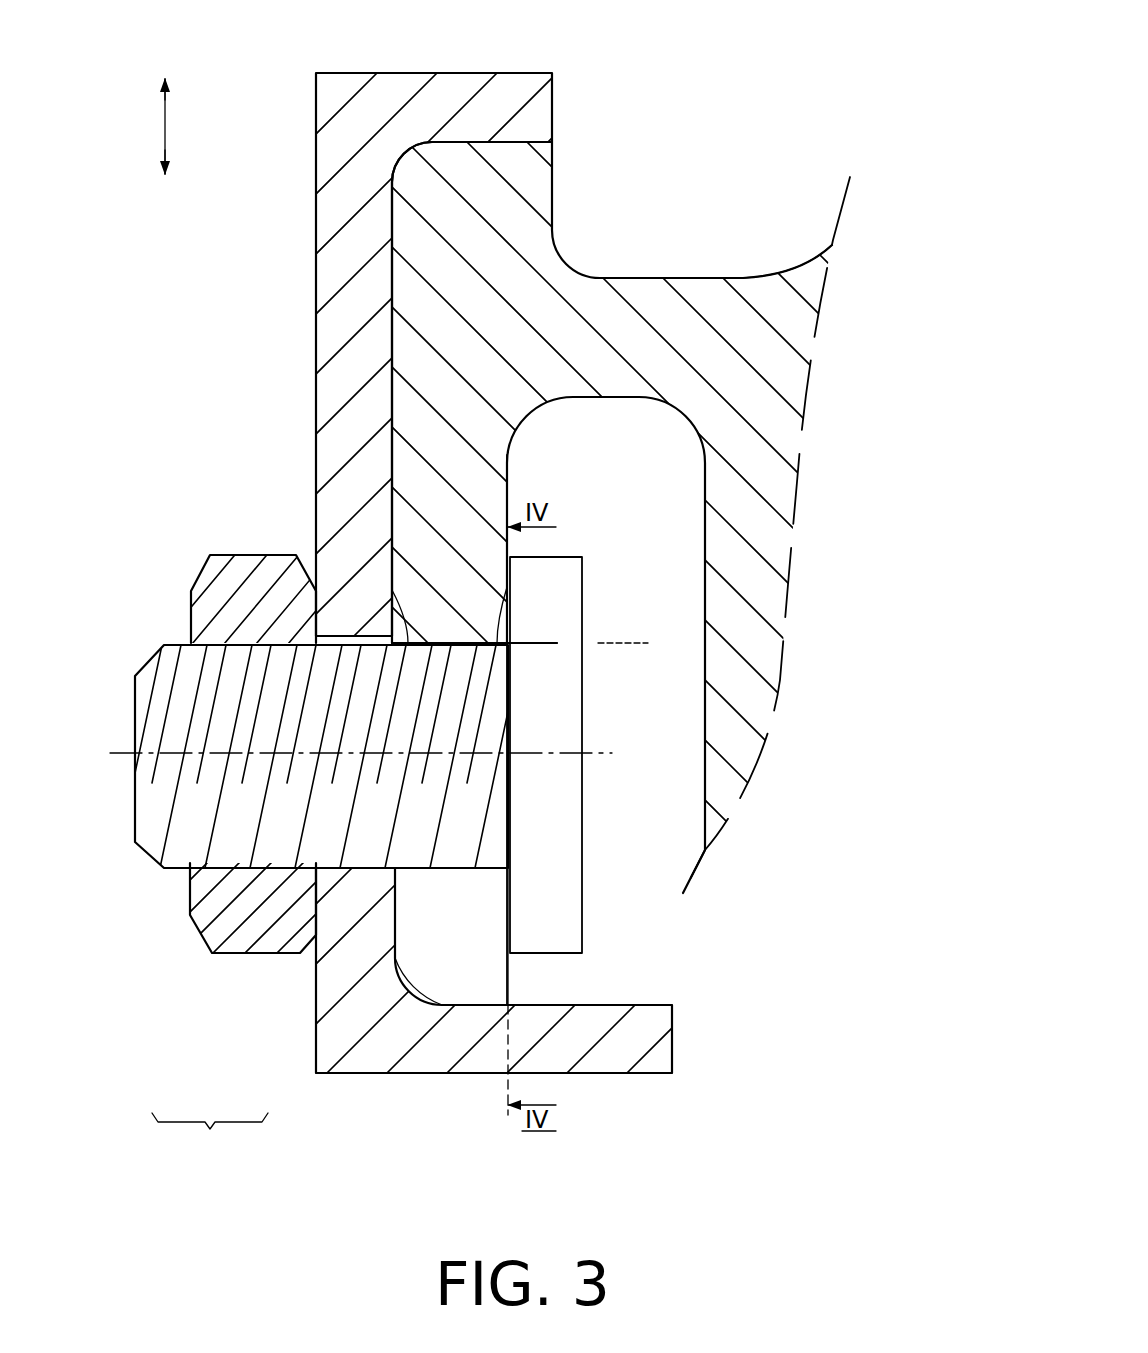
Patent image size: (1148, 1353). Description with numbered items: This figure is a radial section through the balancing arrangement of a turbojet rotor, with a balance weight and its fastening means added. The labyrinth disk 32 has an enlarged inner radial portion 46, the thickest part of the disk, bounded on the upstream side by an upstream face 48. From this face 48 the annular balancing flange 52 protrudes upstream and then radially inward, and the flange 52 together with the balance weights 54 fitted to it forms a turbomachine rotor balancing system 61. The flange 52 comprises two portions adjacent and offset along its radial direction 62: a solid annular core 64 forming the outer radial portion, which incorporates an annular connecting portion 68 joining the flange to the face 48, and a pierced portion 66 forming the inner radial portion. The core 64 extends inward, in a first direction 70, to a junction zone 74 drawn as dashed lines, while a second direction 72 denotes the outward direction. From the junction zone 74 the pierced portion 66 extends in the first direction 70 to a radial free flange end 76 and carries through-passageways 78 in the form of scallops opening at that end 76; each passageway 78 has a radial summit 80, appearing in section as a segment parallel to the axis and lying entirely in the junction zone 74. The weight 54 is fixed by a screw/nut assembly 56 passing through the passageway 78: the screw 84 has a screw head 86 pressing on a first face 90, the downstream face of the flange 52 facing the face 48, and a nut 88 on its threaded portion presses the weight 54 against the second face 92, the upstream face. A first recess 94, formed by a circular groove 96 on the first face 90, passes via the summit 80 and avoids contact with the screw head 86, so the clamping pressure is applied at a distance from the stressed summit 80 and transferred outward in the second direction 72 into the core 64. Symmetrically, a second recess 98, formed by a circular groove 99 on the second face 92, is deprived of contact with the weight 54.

The labyrinth disk 32 is at (850, 356).
The enlarged inner radial portion 46 is at (795, 557).
The upstream face 48 is at (706, 772).
The annular balancing flange 52 is at (556, 181).
The balance weight 54 is at (426, 71).
The screw/nut assembly 56 is at (210, 1138).
The turbomachine rotor balancing system 61 is at (214, 317).
The radial direction 62 is at (165, 130).
The annular core 64 is at (534, 300).
The pierced portion 66 is at (515, 987).
The annular connecting portion 68 is at (743, 286).
The first direction 70 is at (163, 172).
The second direction 72 is at (163, 82).
The junction zone 74 is at (640, 643).
The radial free flange end 76 is at (477, 1008).
The through-passageway 78 is at (467, 947).
The radial summit 80 is at (500, 643).
The screw 84 is at (160, 867).
The screw head 86 is at (583, 580).
The nut 88 is at (259, 958).
The first face 90 is at (508, 492).
The second face 92 is at (392, 398).
The first recess 94 is at (508, 610).
The circular groove 96 is at (510, 632).
The second recess 98 is at (391, 625).
The circular groove 99 is at (400, 640).